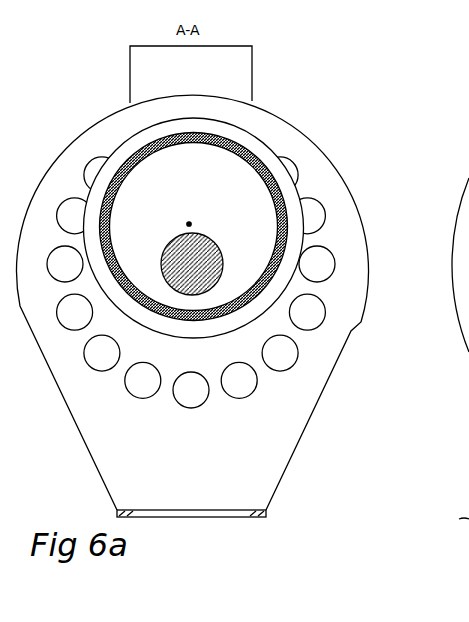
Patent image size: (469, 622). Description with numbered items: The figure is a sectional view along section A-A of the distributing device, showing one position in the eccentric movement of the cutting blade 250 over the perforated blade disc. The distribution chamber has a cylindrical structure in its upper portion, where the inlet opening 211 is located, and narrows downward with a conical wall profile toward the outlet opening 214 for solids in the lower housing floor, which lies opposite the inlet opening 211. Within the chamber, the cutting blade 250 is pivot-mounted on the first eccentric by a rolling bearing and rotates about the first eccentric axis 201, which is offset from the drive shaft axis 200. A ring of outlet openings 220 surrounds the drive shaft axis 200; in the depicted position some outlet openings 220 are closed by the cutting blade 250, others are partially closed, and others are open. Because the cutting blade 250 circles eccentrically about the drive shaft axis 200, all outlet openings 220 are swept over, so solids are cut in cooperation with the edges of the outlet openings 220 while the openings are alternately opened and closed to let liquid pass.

The inlet opening 211 is at (210, 80).
The first eccentric axis 201 is at (189, 224).
The drive shaft axis 200 is at (192, 264).
The first cutting blade 250 is at (303, 218).
The outlet openings 220 is at (282, 157).
The outlet opening for solids 214 is at (210, 517).